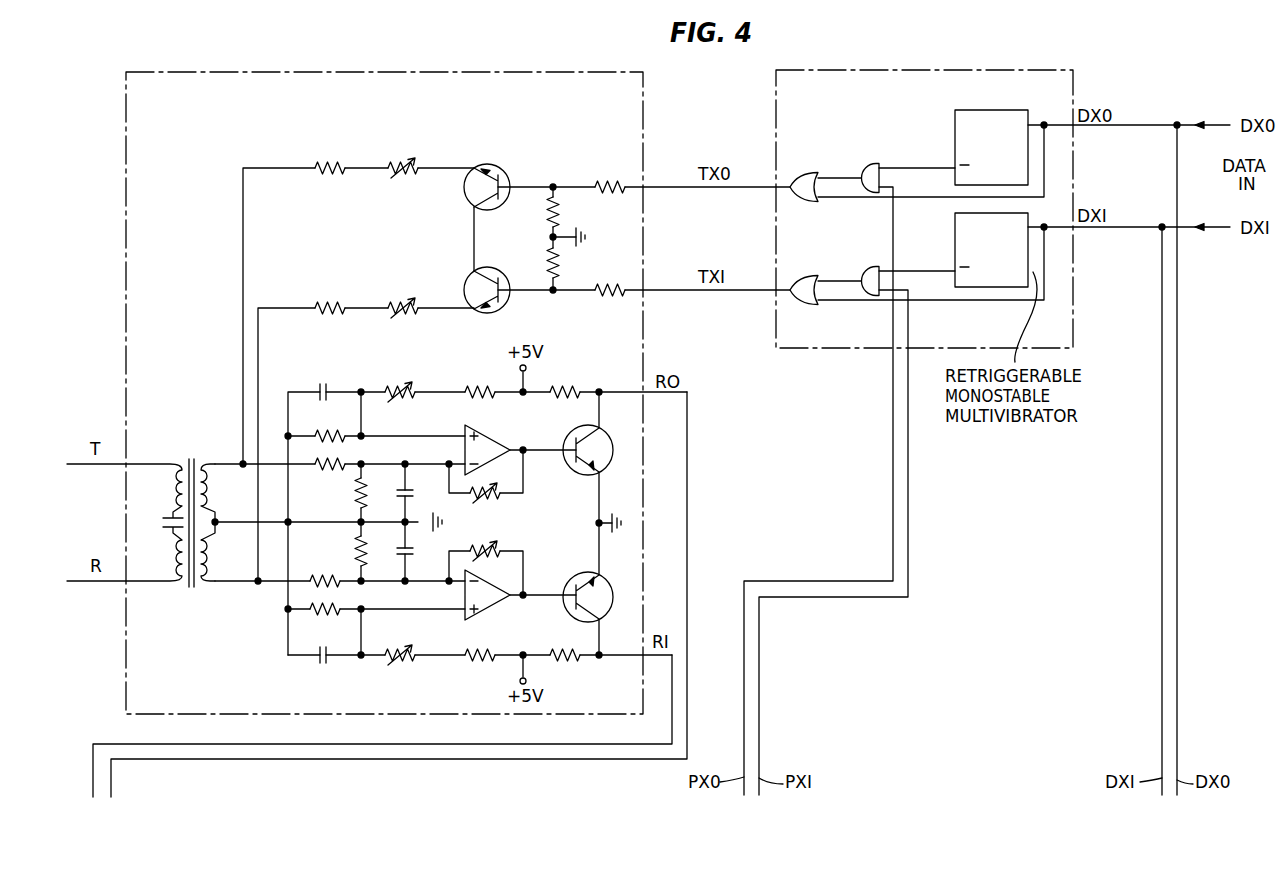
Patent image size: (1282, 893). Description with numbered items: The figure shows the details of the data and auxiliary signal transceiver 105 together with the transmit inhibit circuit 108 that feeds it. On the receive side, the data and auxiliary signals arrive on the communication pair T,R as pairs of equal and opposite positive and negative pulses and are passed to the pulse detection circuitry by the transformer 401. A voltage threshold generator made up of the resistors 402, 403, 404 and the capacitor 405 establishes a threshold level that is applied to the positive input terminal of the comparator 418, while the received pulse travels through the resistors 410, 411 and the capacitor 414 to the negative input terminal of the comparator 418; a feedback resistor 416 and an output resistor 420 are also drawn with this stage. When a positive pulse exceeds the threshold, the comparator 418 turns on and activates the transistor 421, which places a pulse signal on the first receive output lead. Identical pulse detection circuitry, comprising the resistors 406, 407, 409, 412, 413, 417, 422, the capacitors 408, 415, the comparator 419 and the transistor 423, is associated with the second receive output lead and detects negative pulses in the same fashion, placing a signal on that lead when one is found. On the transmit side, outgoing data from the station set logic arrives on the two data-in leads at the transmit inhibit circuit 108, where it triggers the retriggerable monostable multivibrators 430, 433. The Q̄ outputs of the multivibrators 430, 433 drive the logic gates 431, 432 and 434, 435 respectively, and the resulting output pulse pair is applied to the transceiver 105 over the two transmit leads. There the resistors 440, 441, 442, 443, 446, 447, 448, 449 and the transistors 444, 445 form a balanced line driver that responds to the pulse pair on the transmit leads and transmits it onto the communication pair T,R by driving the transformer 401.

The data and auxiliary signal transceiver 105 is at (645, 78).
The transmit inhibit circuit 108 is at (1074, 84).
The transformer 401 is at (192, 459).
The resistor 402 is at (485, 386).
The resistor 403 is at (407, 386).
The resistor 404 is at (333, 432).
The capacitor 405 is at (319, 385).
The resistor 406 is at (478, 668).
The resistor 407 is at (400, 668).
The capacitor 408 is at (322, 672).
The resistor 409 is at (330, 612).
The resistor 410 is at (335, 472).
The resistor 411 is at (355, 495).
The resistor 412 is at (355, 556).
The resistor 413 is at (327, 580).
The capacitor 414 is at (410, 497).
The capacitor 415 is at (412, 553).
The variable resistor 416 is at (490, 500).
The resistor 417 is at (480, 545).
The comparator 418 is at (484, 437).
The comparator 419 is at (500, 610).
The resistor 420 is at (563, 382).
The transistor 421 is at (576, 474).
The resistor 422 is at (568, 668).
The transistor 423 is at (576, 613).
The retriggerable monostable multivibrator 430 is at (985, 110).
The logic gate 431 is at (871, 163).
The logic gate 432 is at (800, 175).
The retriggerable monostable multivibrator 433 is at (955, 230).
The logic gate 434 is at (867, 268).
The logic gate 435 is at (800, 282).
The resistor 440 is at (612, 178).
The resistor 441 is at (612, 298).
The resistor 442 is at (545, 214).
The resistor 443 is at (545, 262).
The transistor 444 is at (502, 170).
The transistor 445 is at (503, 300).
The resistor 446 is at (405, 162).
The resistor 447 is at (330, 162).
The resistor 448 is at (405, 301).
The resistor 449 is at (326, 301).